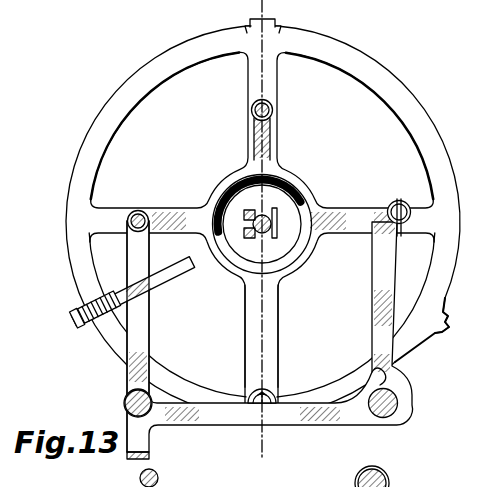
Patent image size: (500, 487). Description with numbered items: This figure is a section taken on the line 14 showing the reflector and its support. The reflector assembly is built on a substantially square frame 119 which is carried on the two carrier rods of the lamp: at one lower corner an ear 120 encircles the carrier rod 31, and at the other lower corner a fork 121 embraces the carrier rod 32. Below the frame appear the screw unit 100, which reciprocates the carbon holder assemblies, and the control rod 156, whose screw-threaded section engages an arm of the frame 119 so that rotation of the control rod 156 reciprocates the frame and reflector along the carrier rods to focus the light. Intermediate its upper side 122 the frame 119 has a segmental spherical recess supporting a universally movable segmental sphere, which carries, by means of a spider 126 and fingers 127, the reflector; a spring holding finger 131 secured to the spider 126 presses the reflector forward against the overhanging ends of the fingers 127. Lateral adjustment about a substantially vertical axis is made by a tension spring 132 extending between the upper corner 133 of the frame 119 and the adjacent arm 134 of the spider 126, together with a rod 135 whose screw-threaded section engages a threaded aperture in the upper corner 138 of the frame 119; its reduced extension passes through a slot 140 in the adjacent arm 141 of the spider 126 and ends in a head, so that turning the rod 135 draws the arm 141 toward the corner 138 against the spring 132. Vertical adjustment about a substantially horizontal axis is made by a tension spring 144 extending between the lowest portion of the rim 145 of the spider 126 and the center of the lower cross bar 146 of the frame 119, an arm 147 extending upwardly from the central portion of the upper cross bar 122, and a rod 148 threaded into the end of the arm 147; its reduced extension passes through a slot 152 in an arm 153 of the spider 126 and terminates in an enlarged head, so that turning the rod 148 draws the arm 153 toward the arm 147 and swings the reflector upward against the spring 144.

The section line 14— 14 is at (271, 13).
The fingers 127 is at (276, 22).
The arm of the spider 153 is at (278, 88).
The slot 152 is at (253, 113).
The rod 148 is at (273, 111).
The arm 147 is at (268, 141).
The arm of the spider 141 is at (99, 212).
The slot 140 is at (139, 210).
The upper corner of the frame 138 is at (161, 214).
The rod 135 is at (130, 221).
The upper side (upper cross bar) of the frame 122 is at (350, 216).
The tension spring 132 is at (403, 205).
The upper corner of the frame 133 is at (373, 227).
The arm of the spider 134 is at (398, 232).
The spring holding finger 131 is at (118, 300).
The spider 126 is at (245, 331).
The tension spring 144 is at (280, 390).
The rim of the spider 145 is at (334, 384).
The frame 119 is at (397, 339).
The carrier rod 32 is at (398, 404).
The fork 121 is at (375, 424).
The ear 120 is at (126, 396).
The carrier rod 31 is at (127, 404).
The lower cross bar of the frame 146 is at (276, 414).
The control rod 156 is at (160, 477).
The screw unit 100 is at (389, 481).